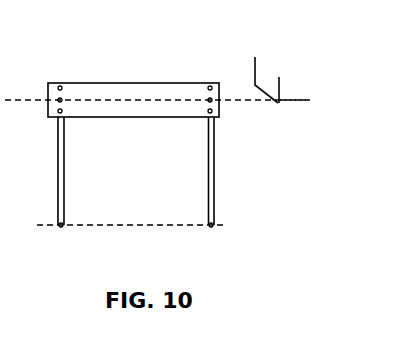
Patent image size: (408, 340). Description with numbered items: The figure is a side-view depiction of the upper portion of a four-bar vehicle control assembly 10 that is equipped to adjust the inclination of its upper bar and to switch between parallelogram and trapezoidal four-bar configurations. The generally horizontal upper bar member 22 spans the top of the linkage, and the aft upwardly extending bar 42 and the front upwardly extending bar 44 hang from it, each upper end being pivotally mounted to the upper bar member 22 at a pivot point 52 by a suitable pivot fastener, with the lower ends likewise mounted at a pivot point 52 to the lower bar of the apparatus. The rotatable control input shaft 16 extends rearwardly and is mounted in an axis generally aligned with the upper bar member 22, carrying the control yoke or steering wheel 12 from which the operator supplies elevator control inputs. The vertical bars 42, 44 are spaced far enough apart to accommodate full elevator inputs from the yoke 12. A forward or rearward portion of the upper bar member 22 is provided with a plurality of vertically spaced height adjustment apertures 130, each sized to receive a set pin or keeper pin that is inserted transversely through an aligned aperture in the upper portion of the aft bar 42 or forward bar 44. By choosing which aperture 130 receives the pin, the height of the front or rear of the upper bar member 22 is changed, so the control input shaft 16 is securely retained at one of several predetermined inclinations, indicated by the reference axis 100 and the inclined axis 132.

The hanger assembly 10 is at (270, 42).
The control yoke/steering wheel 12 is at (279, 86).
The control input shaft 16 is at (237, 102).
The upper bar member 22 is at (126, 82).
The aft upwardly extending bar 42 is at (208, 175).
The front upwardly extending bar 44 is at (58, 176).
The pivot point 52 is at (63, 100).
The lower axis 100 is at (146, 226).
The height adjustment aperture 130 is at (57, 88).
The axis extension 132 is at (298, 102).